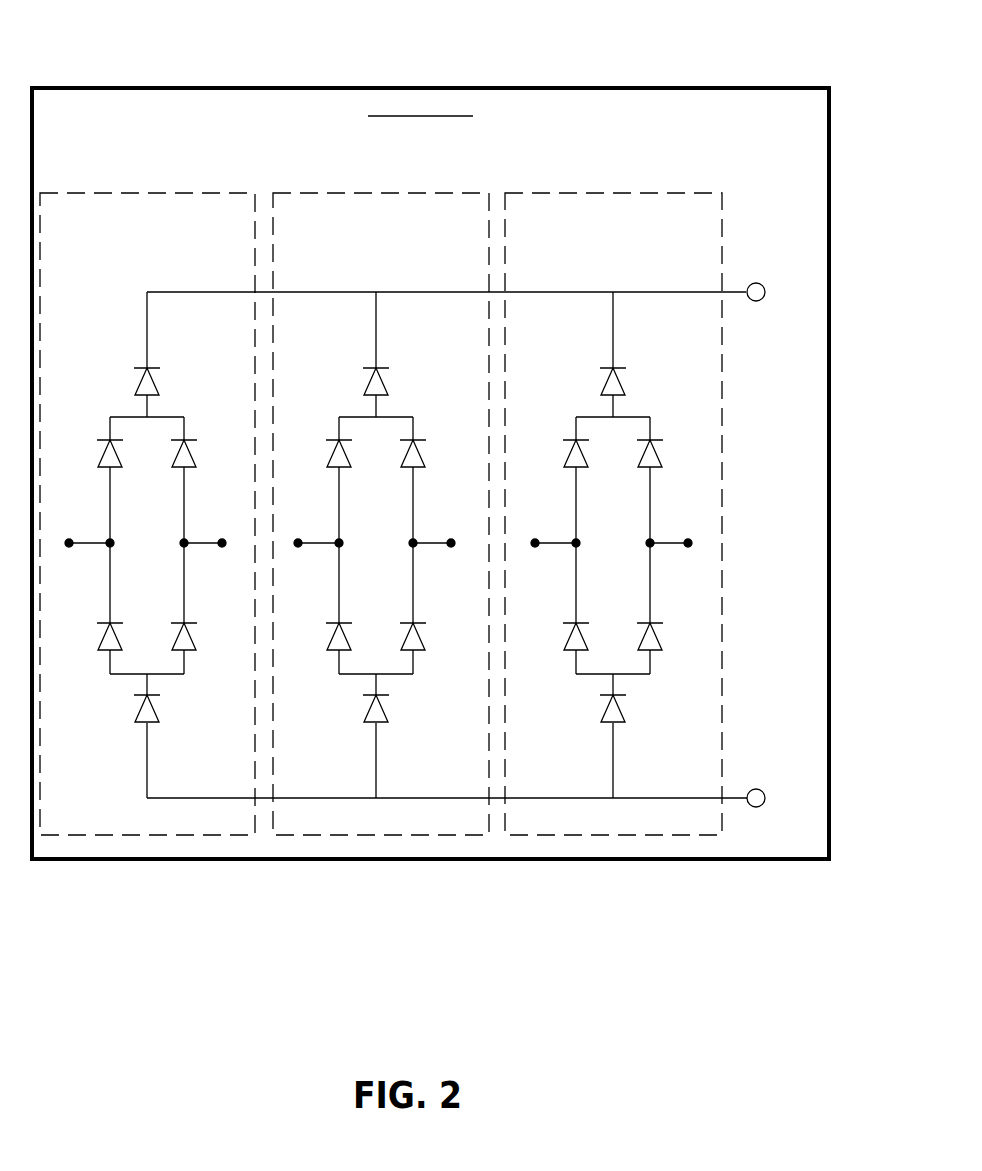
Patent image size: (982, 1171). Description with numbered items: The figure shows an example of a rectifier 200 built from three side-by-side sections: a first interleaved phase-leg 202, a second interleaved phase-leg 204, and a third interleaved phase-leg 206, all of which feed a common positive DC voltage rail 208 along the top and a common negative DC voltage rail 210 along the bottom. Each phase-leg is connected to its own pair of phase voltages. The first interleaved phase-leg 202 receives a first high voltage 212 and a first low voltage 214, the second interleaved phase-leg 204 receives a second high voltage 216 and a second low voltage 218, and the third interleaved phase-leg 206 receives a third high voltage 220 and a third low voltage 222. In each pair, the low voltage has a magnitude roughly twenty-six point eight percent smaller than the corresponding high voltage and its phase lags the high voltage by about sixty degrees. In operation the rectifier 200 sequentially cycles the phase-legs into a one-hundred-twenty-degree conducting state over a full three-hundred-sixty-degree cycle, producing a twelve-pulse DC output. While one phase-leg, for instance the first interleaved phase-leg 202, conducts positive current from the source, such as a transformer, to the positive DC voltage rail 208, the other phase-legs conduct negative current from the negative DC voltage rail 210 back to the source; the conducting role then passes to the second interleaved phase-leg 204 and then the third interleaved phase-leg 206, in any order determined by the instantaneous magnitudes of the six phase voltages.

The rectifier 200 is at (240, 57).
The first interleaved phase-leg 202 is at (147, 499).
The second interleaved phase-leg 204 is at (381, 496).
The third interleaved phase-leg 206 is at (613, 496).
The positive DC voltage rail 208 is at (760, 284).
The negative DC voltage rail 210 is at (757, 807).
The first high voltage 212 is at (108, 541).
The first low voltage 214 is at (185, 541).
The second high voltage 216 is at (337, 541).
The second low voltage 218 is at (414, 541).
The third high voltage 220 is at (574, 541).
The third low voltage 222 is at (651, 541).